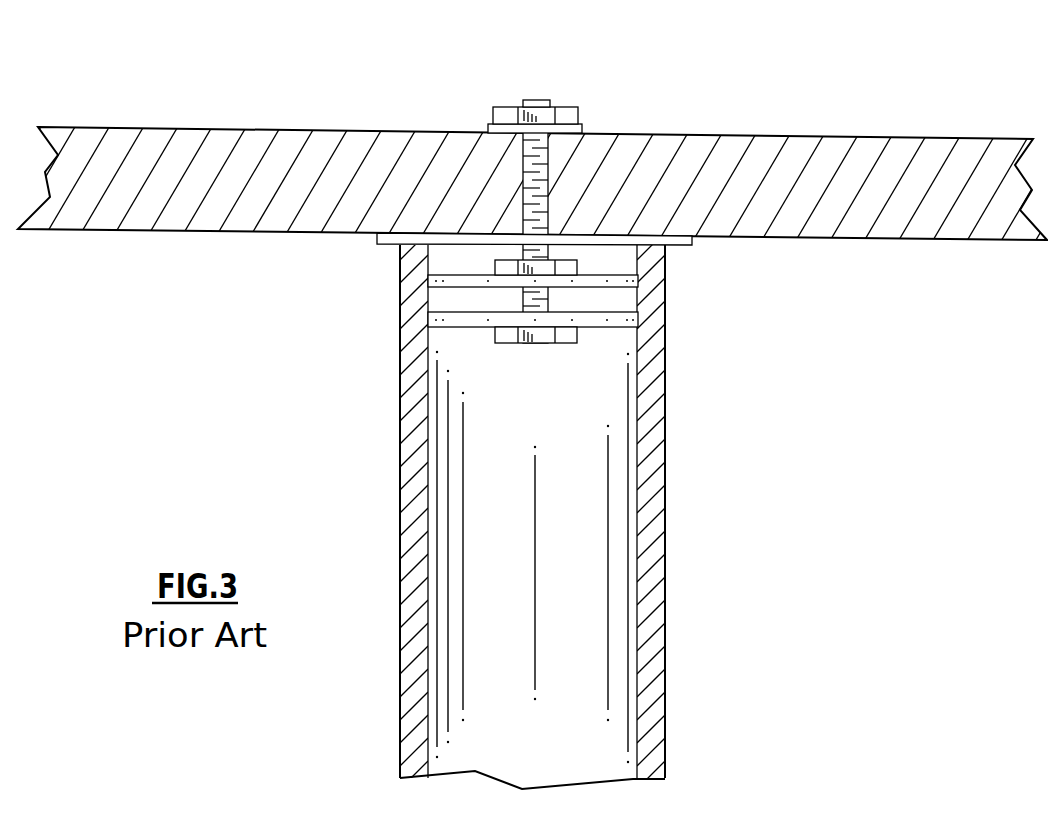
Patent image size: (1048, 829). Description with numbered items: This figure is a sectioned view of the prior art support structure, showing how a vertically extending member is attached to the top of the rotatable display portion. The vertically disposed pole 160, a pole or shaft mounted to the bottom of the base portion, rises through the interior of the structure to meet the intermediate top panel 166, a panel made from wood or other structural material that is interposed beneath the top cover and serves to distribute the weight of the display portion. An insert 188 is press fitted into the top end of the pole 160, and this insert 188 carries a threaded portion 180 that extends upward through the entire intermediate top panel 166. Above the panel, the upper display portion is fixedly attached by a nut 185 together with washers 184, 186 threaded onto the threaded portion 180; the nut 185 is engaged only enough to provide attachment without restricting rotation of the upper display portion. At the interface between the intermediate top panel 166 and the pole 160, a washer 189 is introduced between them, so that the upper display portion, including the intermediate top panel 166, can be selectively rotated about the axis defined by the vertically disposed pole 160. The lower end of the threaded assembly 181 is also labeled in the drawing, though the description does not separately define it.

The pole 160 is at (660, 513).
The intermediate top panel 166 is at (298, 122).
The threaded portion 180 is at (521, 158).
The bolt lower end with nut 181 is at (575, 345).
The washer 184 is at (588, 268).
The nut 185 is at (583, 107).
The washer 186 is at (603, 129).
The insert 188 is at (447, 306).
The washer 189 is at (366, 241).